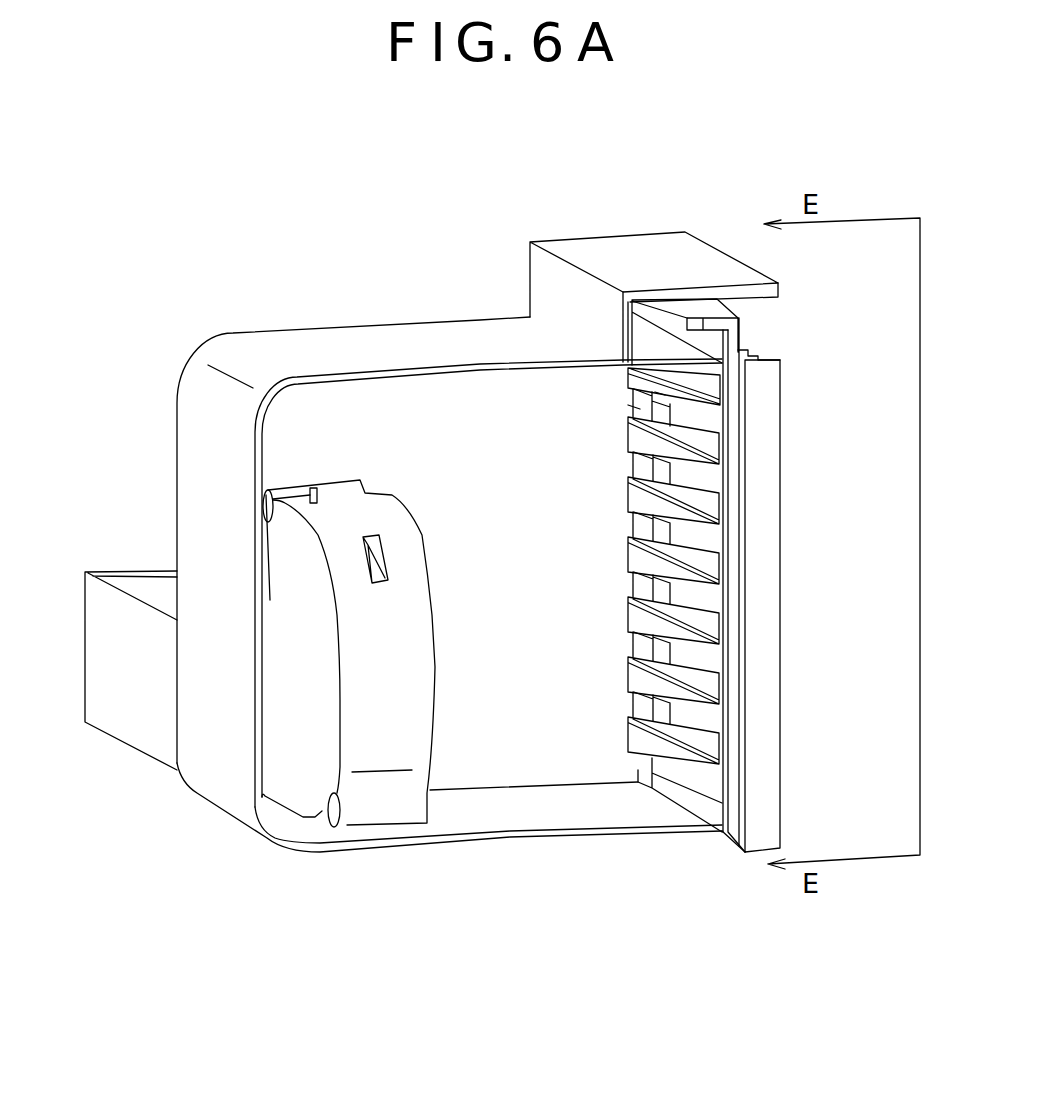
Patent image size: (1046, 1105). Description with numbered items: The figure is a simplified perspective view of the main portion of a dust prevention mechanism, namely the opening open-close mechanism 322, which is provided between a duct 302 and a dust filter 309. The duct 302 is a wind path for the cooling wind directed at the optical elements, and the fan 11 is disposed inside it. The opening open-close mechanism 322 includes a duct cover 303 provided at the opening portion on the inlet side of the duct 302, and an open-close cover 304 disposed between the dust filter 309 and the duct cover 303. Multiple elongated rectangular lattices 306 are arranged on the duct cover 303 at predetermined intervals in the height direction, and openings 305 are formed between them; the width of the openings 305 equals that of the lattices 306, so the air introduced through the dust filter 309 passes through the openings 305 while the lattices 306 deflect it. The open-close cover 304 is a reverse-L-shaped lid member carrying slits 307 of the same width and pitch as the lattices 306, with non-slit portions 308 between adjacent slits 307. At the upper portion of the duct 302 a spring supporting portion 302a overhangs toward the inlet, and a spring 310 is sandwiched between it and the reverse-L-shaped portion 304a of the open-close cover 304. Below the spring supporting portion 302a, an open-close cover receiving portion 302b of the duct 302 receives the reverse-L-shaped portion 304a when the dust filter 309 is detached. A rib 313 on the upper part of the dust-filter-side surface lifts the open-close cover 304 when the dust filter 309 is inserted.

The duct 302 is at (322, 350).
The spring supporting portion 302a is at (603, 253).
The open-close cover receiving portion 302b is at (653, 348).
The duct cover 303 is at (680, 762).
The open-close cover 304 is at (735, 549).
The reverse-L-shaped portion 304a is at (717, 323).
The openings 305 is at (628, 405).
The lattices 306 is at (660, 393).
The slits 307 is at (715, 455).
The non-slit portions 308 is at (720, 413).
The dust filter 309 is at (760, 635).
The spring 310 is at (755, 286).
The rib 313 is at (760, 354).
The opening open-close mechanism 322 is at (731, 864).
The fan 11 is at (297, 790).